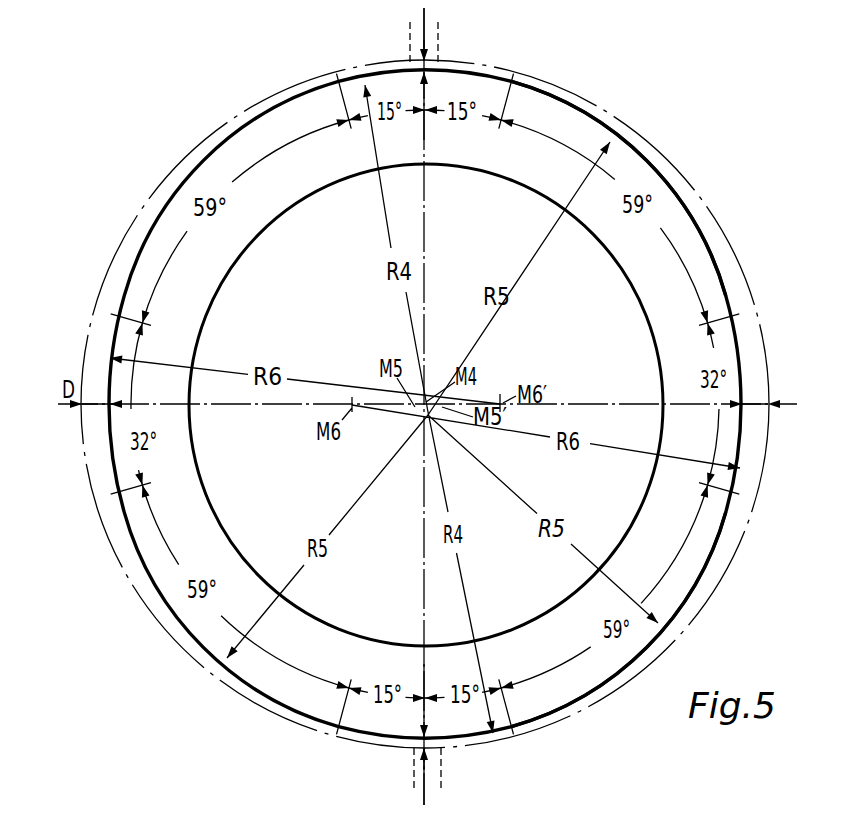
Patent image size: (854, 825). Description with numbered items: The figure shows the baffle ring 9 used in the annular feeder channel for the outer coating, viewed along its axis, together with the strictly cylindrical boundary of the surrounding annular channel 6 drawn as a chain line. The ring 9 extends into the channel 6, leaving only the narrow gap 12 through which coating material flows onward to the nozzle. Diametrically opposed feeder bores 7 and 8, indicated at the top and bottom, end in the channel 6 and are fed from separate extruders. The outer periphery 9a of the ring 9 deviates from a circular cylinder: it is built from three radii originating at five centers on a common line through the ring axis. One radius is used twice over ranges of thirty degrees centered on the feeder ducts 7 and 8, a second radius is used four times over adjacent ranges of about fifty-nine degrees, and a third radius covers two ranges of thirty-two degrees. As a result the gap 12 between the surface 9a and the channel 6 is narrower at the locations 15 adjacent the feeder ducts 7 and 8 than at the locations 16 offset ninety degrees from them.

The annular duct and channel 6 is at (629, 140).
The feeder bore 7 is at (435, 774).
The feeder bore 8 is at (437, 42).
The baffle ring 9 is at (546, 112).
The outer periphery 9a is at (683, 186).
The gap 12 is at (574, 710).
The locations adjacent the feeder ducts 15 is at (417, 61).
The locations offset from the feeder ducts 16 is at (95, 407).